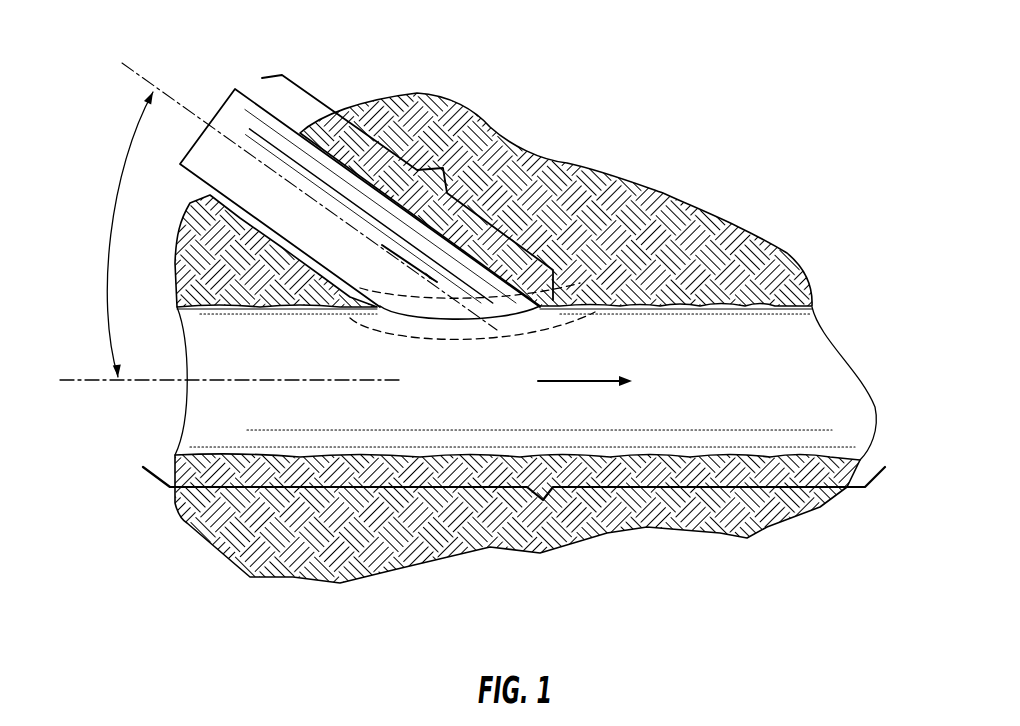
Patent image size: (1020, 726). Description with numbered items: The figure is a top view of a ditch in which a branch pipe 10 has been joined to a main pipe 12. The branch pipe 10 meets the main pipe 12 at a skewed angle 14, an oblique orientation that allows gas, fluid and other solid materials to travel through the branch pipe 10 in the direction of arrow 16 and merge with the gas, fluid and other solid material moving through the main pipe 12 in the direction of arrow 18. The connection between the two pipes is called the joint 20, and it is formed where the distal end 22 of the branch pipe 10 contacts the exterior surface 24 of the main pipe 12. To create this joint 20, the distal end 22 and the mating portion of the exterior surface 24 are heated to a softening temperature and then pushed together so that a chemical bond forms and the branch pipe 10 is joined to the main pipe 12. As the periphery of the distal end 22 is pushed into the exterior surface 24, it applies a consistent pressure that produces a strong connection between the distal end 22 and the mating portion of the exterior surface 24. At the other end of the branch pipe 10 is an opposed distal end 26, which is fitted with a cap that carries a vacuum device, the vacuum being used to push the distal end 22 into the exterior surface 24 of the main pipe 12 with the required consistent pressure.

The branch pipe 10 is at (447, 170).
The main pipe 12 is at (543, 500).
The skewed angle 14 is at (112, 242).
The arrow 16 is at (387, 250).
The arrow 18 is at (610, 380).
The joint 20 is at (655, 255).
The distal end 22 is at (487, 320).
The exterior surface 24 is at (453, 388).
The opposed distal end 26 is at (221, 107).